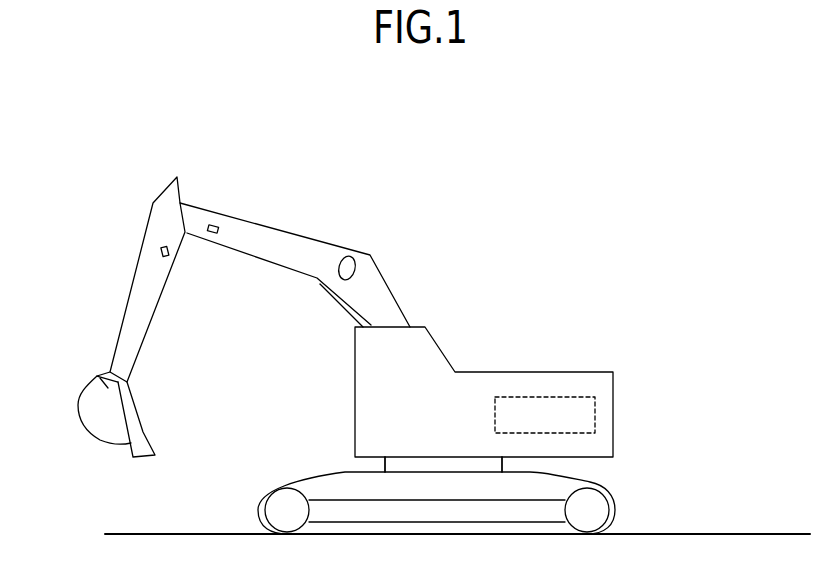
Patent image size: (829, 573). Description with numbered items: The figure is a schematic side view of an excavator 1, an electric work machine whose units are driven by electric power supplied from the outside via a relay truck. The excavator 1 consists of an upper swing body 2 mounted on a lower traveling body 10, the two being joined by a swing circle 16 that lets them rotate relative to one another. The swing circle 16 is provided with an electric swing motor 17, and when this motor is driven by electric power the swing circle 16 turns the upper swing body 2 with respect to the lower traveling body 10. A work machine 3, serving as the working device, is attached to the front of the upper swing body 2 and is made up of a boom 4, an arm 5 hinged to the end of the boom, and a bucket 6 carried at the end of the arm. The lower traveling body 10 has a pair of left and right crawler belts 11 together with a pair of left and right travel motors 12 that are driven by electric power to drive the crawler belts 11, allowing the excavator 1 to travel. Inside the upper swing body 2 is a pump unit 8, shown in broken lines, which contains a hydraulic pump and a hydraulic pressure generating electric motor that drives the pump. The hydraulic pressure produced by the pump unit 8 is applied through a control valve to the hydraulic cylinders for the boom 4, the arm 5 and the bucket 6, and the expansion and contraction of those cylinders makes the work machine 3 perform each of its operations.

The excavator 1 is at (519, 230).
The upper swing body 2 is at (545, 371).
The work machine 3 is at (271, 173).
The boom 4 is at (293, 237).
The arm 5 is at (140, 290).
The bucket 6 is at (97, 378).
The pump unit 8 is at (597, 412).
The lower traveling body 10 is at (617, 487).
The crawler belt 11 is at (281, 487).
The travel motor 12 is at (612, 505).
The swing circle 16 is at (382, 466).
The electric swing motor 17 is at (443, 464).